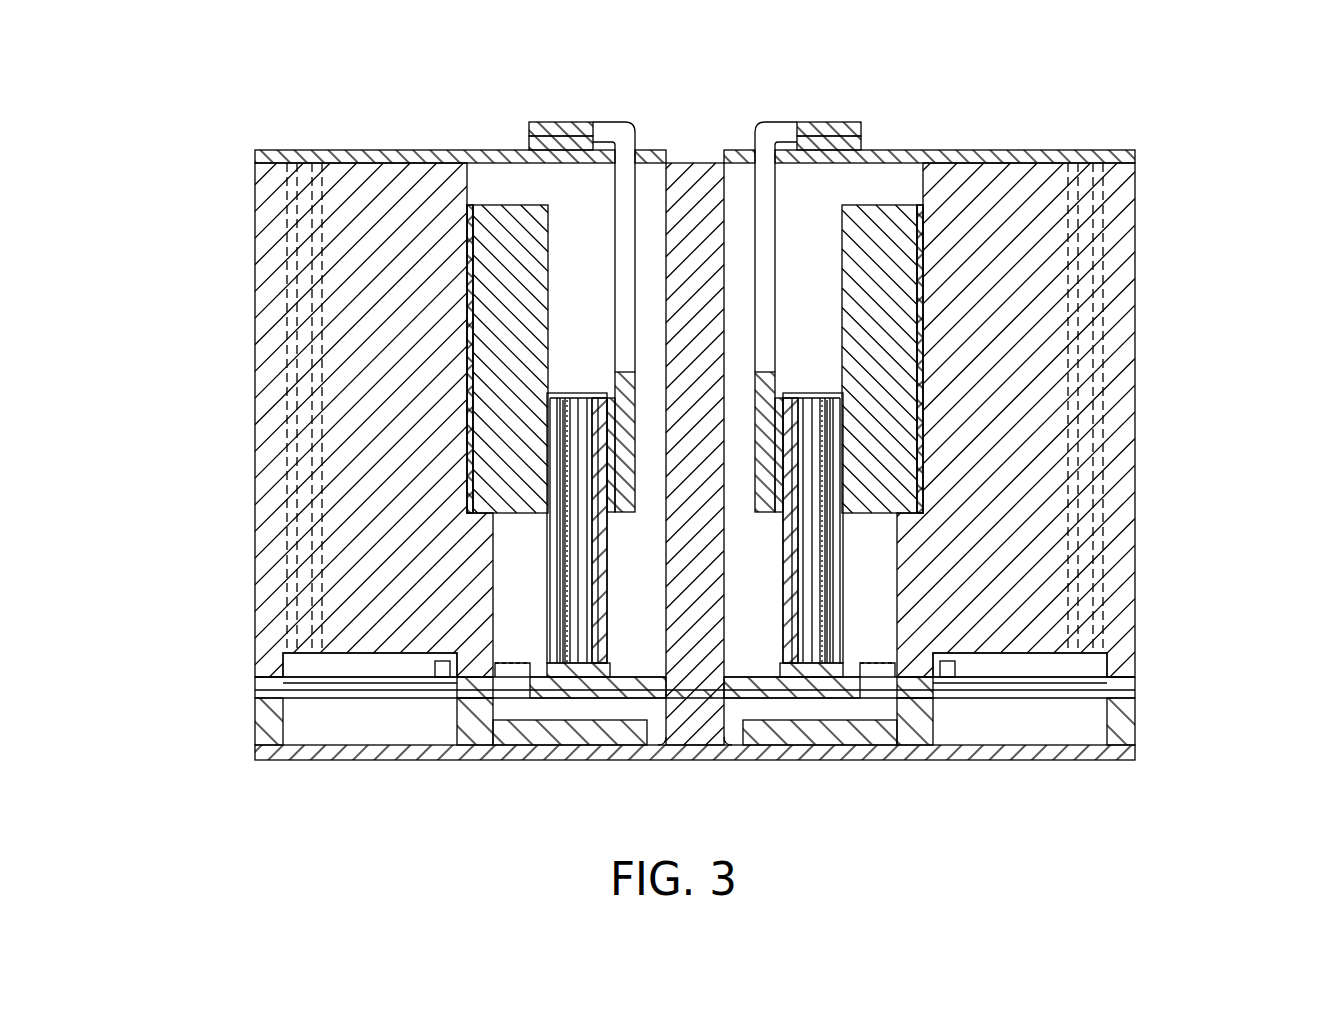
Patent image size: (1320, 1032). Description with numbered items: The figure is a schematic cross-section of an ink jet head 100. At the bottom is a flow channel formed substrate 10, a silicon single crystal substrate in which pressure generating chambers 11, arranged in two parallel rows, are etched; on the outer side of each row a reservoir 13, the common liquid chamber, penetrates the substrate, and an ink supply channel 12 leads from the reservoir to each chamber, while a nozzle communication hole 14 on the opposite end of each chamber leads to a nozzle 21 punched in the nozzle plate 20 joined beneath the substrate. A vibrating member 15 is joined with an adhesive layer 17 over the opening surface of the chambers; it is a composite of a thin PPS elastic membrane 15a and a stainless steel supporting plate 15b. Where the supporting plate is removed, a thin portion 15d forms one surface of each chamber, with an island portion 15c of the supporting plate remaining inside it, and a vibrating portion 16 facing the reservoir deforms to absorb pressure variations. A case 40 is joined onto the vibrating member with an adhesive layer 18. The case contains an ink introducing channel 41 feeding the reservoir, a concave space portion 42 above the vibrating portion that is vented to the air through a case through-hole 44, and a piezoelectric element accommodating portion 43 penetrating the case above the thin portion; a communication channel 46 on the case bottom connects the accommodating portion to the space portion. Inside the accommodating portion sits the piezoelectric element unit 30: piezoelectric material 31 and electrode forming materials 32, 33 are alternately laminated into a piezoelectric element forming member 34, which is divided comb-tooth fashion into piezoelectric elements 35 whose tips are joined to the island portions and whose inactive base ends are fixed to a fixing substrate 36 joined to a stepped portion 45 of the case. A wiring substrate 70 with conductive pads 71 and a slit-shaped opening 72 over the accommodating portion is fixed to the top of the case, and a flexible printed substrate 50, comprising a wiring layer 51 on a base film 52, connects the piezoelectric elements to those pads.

The ink jet head 100 is at (1308, 79).
The flow channel formed substrate 10 is at (268, 726).
The pressure generating chamber 11 is at (520, 735).
The ink supply channel 12 is at (463, 712).
The reservoir 13 is at (348, 730).
The nozzle communication hole 14 is at (664, 735).
The vibrating member 15 is at (158, 617).
The elastic membrane 15a is at (280, 680).
The supporting plate 15b is at (283, 660).
The island portion 15c is at (560, 695).
The thin portion 15d is at (710, 752).
The vibrating portion 16 is at (325, 705).
The adhesive layer 17 is at (256, 694).
The adhesive layer 18 is at (262, 675).
The nozzle plate 20 is at (262, 752).
The nozzle 21 is at (659, 750).
The piezoelectric element unit 30 is at (158, 315).
The piezoelectric material 31 is at (575, 618).
The electrode forming material 32 is at (566, 604).
The electrode forming material 33 is at (578, 597).
The piezoelectric element forming member 34 is at (158, 432).
The piezoelectric element 35 is at (568, 450).
The fixing substrate 36 is at (500, 322).
The case 40 is at (280, 237).
The ink introducing channel 41 is at (291, 150).
The space portion 42 is at (405, 668).
The piezoelectric element accommodating portion 43 is at (580, 270).
The case through-hole 44 is at (319, 150).
The stepped portion 45 is at (518, 562).
The communication channel 46 is at (432, 672).
The flexible printed substrate 50 is at (762, 130).
The wiring layer 51 is at (818, 137).
The base film 52 is at (808, 126).
The wiring substrate 70 is at (945, 152).
The conductive pad 71 is at (860, 148).
The opening 72 is at (648, 152).